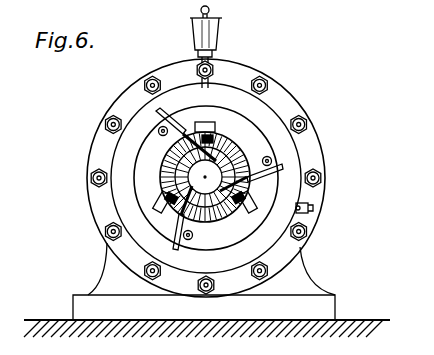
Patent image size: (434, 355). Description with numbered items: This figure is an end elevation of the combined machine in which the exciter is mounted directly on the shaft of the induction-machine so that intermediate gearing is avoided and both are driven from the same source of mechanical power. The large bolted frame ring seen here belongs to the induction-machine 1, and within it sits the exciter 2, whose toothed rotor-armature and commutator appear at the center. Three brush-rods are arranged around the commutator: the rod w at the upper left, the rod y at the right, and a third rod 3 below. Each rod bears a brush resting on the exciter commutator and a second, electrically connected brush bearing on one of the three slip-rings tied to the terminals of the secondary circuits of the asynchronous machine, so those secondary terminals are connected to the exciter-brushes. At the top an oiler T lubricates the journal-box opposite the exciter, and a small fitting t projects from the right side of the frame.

The oiler T is at (211, 47).
The induction-machine 1 is at (206, 175).
The exciter 2 is at (206, 169).
The rod w is at (178, 134).
The rod y is at (256, 174).
The brush holder 3 is at (183, 226).
The terminal screw t is at (313, 208).